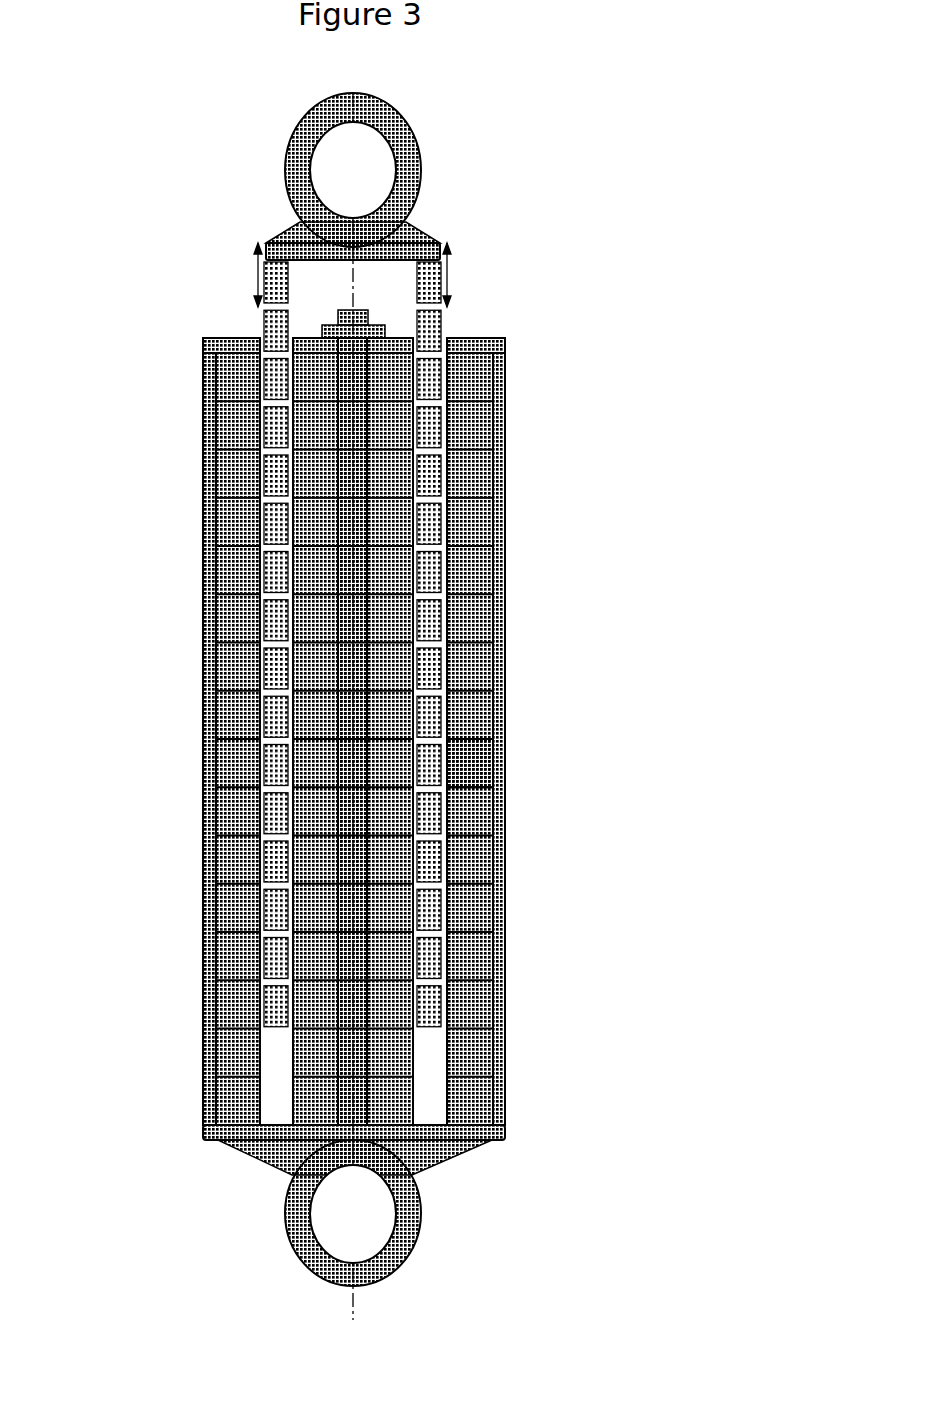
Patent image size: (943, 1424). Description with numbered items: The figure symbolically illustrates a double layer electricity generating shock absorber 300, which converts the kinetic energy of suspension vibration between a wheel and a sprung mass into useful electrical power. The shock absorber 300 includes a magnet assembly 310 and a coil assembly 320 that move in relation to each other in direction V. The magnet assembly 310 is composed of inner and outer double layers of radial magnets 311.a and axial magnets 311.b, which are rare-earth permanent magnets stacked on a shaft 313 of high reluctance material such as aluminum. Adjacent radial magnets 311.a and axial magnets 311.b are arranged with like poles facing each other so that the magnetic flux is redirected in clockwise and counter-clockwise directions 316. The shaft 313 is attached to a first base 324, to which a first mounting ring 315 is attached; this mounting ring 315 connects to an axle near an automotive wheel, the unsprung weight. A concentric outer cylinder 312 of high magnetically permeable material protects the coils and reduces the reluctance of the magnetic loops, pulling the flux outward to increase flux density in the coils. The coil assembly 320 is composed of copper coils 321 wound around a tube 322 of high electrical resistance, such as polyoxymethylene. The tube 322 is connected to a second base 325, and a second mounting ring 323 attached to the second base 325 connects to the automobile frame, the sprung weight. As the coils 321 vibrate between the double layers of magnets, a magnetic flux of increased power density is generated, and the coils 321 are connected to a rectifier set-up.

The shock absorber 300 is at (735, 253).
The magnet assembly 310 is at (618, 716).
The radial magnets 311.a is at (395, 382).
The axial magnets 311.b is at (385, 527).
The concentric outer cylinder 312 is at (205, 707).
The shaft 313 is at (338, 541).
The first mounting ring 315 is at (370, 1198).
The clockwise and counter-clockwise directions 316 is at (465, 742).
The coil assembly 320 is at (214, 288).
The coils 321 is at (272, 858).
The tube 322 is at (338, 290).
The second mounting ring 323 is at (423, 170).
The first base 324 is at (500, 1128).
The second base 325 is at (359, 176).